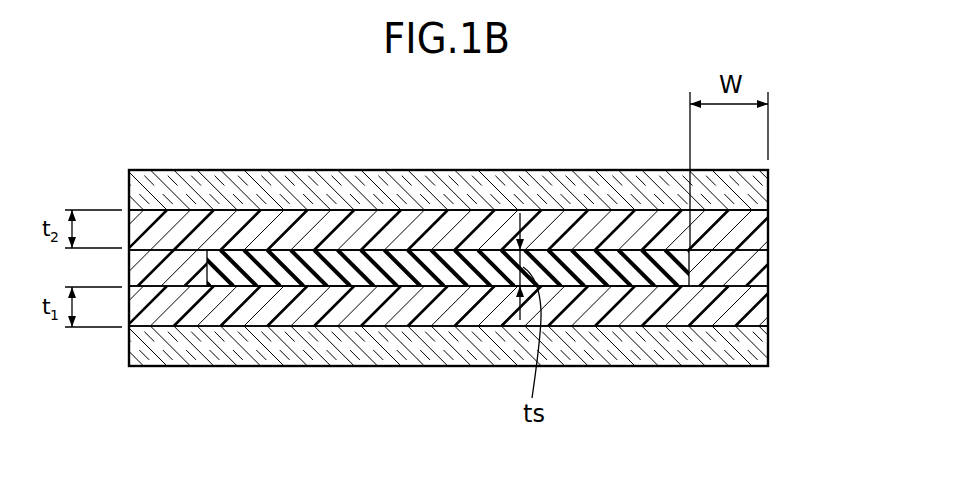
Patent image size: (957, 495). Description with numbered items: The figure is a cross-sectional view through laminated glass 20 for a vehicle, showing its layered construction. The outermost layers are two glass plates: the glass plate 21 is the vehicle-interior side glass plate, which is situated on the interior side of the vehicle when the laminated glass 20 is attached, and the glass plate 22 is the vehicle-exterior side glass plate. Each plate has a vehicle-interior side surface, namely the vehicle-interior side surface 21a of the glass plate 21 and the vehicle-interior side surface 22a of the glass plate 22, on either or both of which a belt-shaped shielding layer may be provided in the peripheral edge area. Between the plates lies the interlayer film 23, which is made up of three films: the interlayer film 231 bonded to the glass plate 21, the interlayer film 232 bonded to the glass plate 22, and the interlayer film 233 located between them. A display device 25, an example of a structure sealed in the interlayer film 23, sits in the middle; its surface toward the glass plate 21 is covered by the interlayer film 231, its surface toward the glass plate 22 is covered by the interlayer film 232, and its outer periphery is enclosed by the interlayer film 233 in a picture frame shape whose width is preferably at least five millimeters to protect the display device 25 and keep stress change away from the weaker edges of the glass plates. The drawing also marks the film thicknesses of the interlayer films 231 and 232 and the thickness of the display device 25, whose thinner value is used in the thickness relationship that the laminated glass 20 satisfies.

The laminated glass 20 is at (468, 224).
The glass plate 21 is at (757, 345).
The vehicle-interior side surface 21a is at (277, 367).
The glass plate 22 is at (757, 188).
The vehicle-interior side surface 22a is at (276, 210).
The interlayer film 23 is at (468, 209).
The interlayer film 231 is at (462, 306).
The interlayer film 232 is at (757, 226).
The interlayer film 233 is at (444, 189).
The display device 25 is at (449, 268).